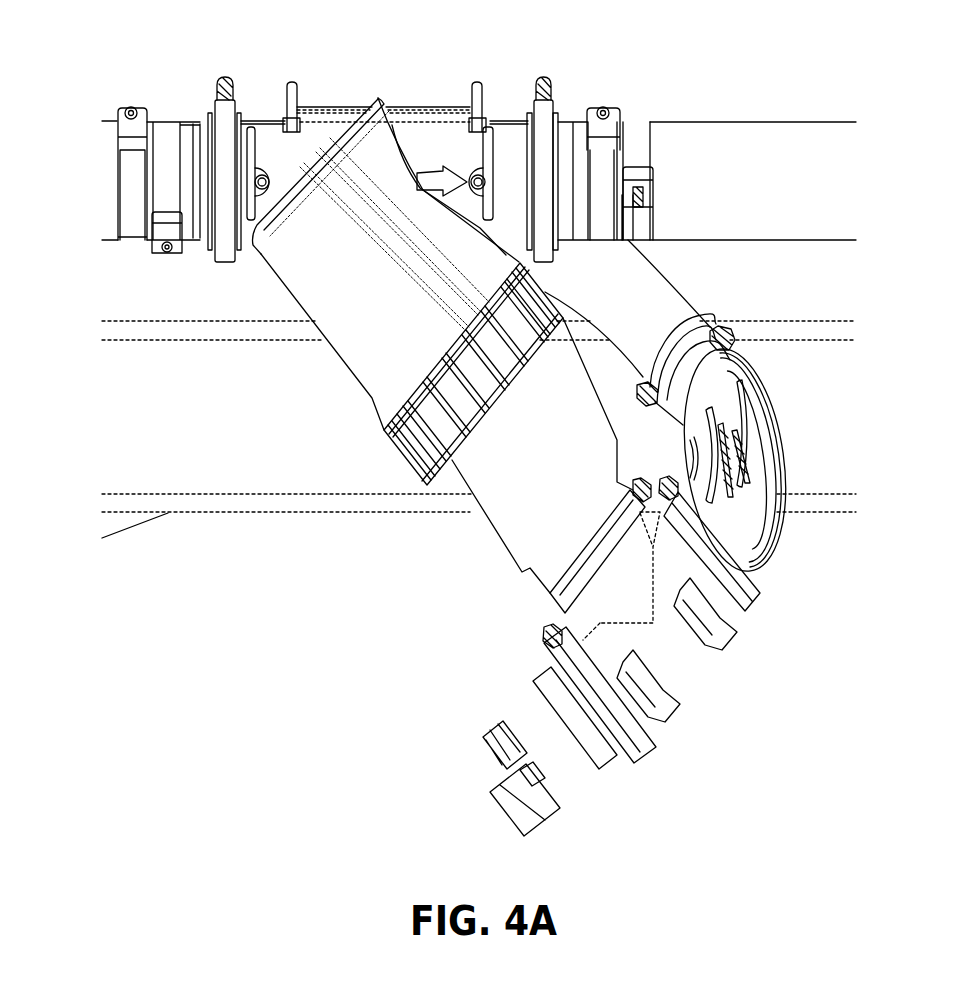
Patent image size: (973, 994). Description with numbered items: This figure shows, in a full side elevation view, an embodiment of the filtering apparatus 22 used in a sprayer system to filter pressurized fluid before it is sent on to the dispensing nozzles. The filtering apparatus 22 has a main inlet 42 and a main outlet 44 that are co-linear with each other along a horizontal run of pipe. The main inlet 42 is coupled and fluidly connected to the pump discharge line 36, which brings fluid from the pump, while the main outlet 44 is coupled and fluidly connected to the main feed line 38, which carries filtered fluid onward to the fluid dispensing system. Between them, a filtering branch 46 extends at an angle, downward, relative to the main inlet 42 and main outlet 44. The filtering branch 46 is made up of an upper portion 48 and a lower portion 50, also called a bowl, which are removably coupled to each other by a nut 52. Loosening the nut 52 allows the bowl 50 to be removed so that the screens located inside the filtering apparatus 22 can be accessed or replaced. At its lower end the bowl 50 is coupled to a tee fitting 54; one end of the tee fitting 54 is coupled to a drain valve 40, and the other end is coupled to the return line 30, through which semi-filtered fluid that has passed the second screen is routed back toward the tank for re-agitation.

The filtering apparatus 22 is at (225, 408).
The return line 30 is at (676, 283).
The pump discharge line 36 is at (102, 137).
The main feed line 38 is at (748, 132).
The drain valve 40 is at (553, 797).
The main inlet 42 is at (256, 120).
The main outlet 44 is at (508, 118).
The filtering branch 46 is at (322, 332).
The upper portion 48 is at (280, 273).
The lower portion 50 is at (480, 523).
The nut 52 is at (403, 462).
The tee fitting 54 is at (677, 662).